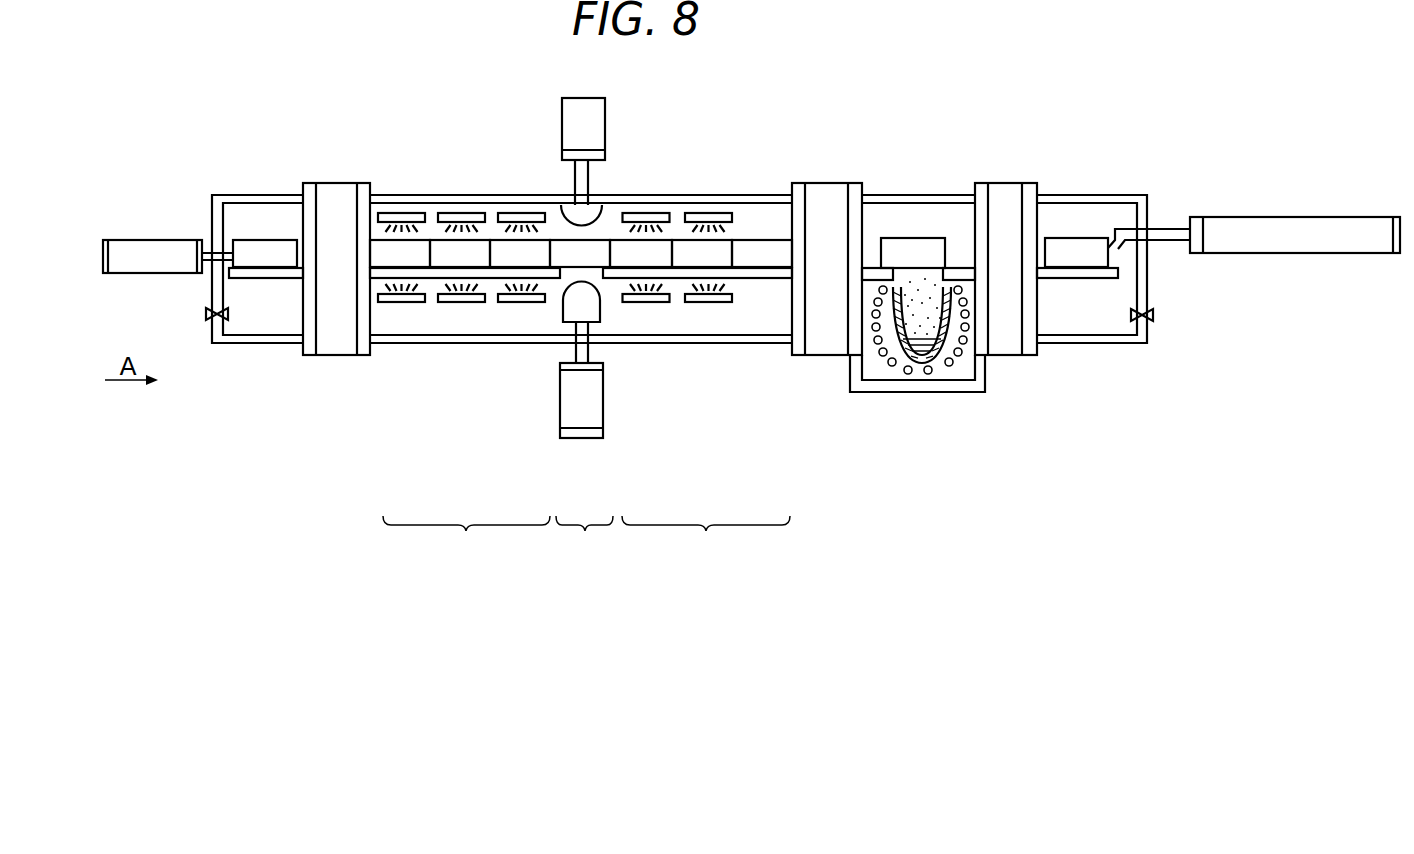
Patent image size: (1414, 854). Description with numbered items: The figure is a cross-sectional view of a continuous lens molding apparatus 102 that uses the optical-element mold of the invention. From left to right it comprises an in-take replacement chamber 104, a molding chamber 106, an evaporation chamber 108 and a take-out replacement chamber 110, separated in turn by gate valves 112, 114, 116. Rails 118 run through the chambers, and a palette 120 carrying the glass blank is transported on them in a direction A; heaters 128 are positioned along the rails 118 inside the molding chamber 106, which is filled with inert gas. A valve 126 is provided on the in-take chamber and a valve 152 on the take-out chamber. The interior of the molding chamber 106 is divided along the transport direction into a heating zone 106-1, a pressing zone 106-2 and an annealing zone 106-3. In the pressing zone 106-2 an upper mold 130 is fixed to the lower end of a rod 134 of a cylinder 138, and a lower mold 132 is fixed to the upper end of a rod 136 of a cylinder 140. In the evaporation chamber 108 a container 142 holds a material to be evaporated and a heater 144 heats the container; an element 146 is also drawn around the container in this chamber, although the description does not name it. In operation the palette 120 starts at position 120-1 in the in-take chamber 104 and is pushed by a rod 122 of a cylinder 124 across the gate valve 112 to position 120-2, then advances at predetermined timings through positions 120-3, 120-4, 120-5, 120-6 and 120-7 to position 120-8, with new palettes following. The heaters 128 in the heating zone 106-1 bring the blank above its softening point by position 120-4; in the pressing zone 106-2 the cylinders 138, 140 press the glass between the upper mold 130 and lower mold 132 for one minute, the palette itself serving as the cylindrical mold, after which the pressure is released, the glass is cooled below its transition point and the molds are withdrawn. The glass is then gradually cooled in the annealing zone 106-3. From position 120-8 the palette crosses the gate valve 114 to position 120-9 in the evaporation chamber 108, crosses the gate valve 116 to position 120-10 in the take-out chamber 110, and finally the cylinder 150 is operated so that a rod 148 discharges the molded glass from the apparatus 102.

The molding apparatus 102 is at (744, 158).
The in-take replacement chamber 104 is at (231, 192).
The molding chamber 106 is at (470, 191).
The heating zone 106-1 is at (466, 540).
The pressing zone 106-2 is at (584, 540).
The annealing zone 106-3 is at (706, 540).
The evaporation chamber 108 is at (886, 189).
The take-out replacement chamber 110 is at (1070, 189).
The gate valve 112 is at (340, 193).
The gate valve 114 is at (824, 193).
The gate valve 116 is at (1004, 193).
The rails 118 is at (254, 280).
The palette 120 is at (721, 266).
The palette position 120-1 is at (265, 254).
The palette position 120-2 is at (400, 254).
The palette position 120-3 is at (460, 254).
The palette position 120-4 is at (520, 254).
The palette position 120-5 is at (580, 254).
The palette position 120-6 is at (641, 254).
The palette position 120-7 is at (702, 254).
The palette position 120-8 is at (762, 254).
The palette position 120-9 is at (913, 253).
The palette position 120-10 is at (1076, 253).
The rod 122 is at (212, 232).
The cylinder 124 is at (135, 240).
The valve 126 is at (206, 312).
The heaters 128 is at (450, 213).
The upper mold 130 is at (565, 210).
The lower mold 132 is at (602, 300).
The rod 134 is at (588, 186).
The rod 136 is at (575, 353).
The cylinder 138 is at (590, 130).
The cylinder 140 is at (603, 415).
The container 142 is at (907, 360).
The heater 144 is at (946, 352).
The induction coil 146 is at (942, 352).
The rod 148 is at (1112, 235).
The cylinder 150 is at (1310, 226).
The valve 152 is at (1152, 315).